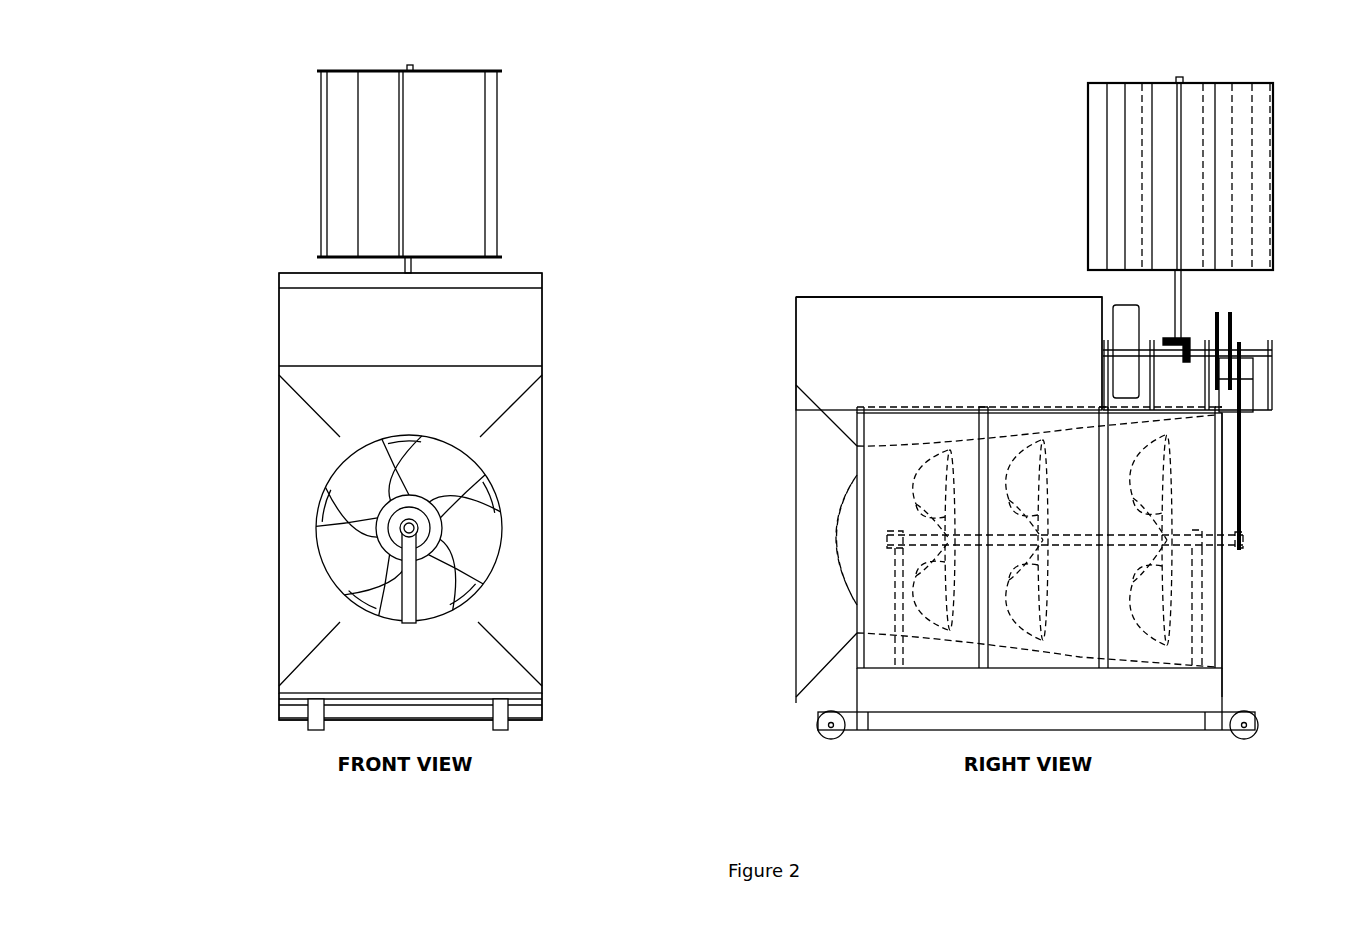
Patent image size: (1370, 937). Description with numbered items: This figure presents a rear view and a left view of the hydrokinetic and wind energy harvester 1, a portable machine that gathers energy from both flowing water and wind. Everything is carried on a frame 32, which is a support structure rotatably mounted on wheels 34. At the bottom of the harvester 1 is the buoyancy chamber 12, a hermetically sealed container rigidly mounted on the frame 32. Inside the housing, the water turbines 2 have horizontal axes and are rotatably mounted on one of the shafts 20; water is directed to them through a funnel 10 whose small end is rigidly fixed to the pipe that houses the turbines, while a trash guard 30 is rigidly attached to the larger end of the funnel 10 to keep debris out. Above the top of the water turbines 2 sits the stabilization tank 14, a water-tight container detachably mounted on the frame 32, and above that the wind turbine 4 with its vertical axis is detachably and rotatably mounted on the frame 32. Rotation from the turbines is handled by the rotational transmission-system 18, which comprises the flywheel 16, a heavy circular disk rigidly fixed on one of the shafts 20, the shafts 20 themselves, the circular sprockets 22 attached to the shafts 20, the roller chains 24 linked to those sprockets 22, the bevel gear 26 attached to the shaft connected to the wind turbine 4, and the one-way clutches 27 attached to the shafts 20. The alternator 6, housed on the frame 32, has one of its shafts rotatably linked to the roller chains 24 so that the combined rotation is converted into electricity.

The hydrokinetic & wind energy harvester 1 is at (288, 162).
The water turbines 2 is at (362, 570).
The wind turbine 4 is at (470, 160).
The alternator 6 is at (1254, 372).
The funnel 10 is at (298, 457).
The buoyancy chamber 12 is at (902, 700).
The stabilization tank 14 is at (315, 330).
The flywheel 16 is at (1113, 303).
The rotational transmission-system 18 is at (1237, 305).
The shafts 20 is at (1245, 545).
The sprockets 22 is at (1243, 323).
The roller chains 24 is at (1243, 455).
The bevel gear 26 is at (1186, 362).
The one-way clutches 27 is at (1250, 338).
The trash guard 30 is at (793, 450).
The frame 32 is at (1222, 655).
The wheels 34 is at (1257, 713).